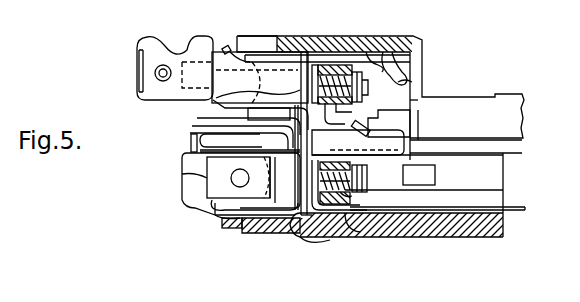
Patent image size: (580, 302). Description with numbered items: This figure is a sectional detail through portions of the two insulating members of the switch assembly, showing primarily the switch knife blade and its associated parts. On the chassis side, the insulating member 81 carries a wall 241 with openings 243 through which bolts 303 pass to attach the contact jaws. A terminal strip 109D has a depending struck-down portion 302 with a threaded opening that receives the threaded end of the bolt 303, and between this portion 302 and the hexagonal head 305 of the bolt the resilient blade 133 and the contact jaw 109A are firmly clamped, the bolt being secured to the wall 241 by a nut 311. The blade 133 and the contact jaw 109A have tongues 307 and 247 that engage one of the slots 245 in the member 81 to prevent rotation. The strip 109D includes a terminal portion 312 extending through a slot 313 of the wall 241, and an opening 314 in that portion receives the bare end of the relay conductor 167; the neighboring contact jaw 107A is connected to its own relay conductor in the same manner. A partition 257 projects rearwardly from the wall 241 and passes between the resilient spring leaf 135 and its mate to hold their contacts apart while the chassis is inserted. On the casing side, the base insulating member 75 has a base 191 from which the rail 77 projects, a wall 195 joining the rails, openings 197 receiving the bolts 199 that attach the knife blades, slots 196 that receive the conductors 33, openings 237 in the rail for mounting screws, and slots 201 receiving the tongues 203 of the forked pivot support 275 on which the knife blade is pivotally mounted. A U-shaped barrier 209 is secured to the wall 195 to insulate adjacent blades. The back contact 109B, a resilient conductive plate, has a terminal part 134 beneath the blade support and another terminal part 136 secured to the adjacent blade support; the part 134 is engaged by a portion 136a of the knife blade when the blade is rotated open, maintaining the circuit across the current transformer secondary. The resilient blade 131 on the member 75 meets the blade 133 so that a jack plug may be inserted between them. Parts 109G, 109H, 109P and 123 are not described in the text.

The insulating member 81 is at (414, 40).
The slots 245 is at (276, 50).
The terminal portion 312 is at (393, 60).
The cap 109G is at (147, 37).
The flange 109H is at (137, 71).
The terminal strip 109D is at (225, 47).
The depending struck down portion 302 is at (265, 86).
The hexagonal head 305 is at (262, 94).
The tongue 307 is at (301, 50).
The tongue 247 is at (323, 52).
The nut 311 is at (358, 88).
The bolt 303 is at (362, 97).
The slot 313 is at (366, 48).
The opening 314 is at (386, 50).
The conductor 167 is at (412, 82).
The partition 257 is at (418, 116).
The resilient spring leaf 135 is at (403, 127).
The rail 77 is at (356, 150).
The openings 243 is at (342, 106).
The wall 241 is at (338, 113).
The plate 123 is at (320, 130).
The contact jaw 109A is at (269, 114).
The resilient blade 133 is at (200, 118).
The resilient blade 131 is at (200, 130).
The bracket 109P is at (266, 140).
The contact jaw 107A is at (250, 143).
The U-shaped barrier 209 is at (182, 199).
The portion of the blade 136a is at (182, 174).
The terminal part 136 is at (268, 192).
The forked support 275 is at (226, 192).
The back contact 109B is at (220, 217).
The terminal part 134 is at (242, 228).
The slots 201 is at (279, 232).
The base insulating member 75 is at (430, 261).
The openings 237 is at (424, 175).
The base 191 is at (452, 214).
The conductors 33 is at (525, 212).
The openings 197 is at (354, 185).
The bolts 199 is at (348, 196).
The slots 196 is at (333, 232).
The wall 195 is at (359, 231).
The tongues 203 is at (307, 218).